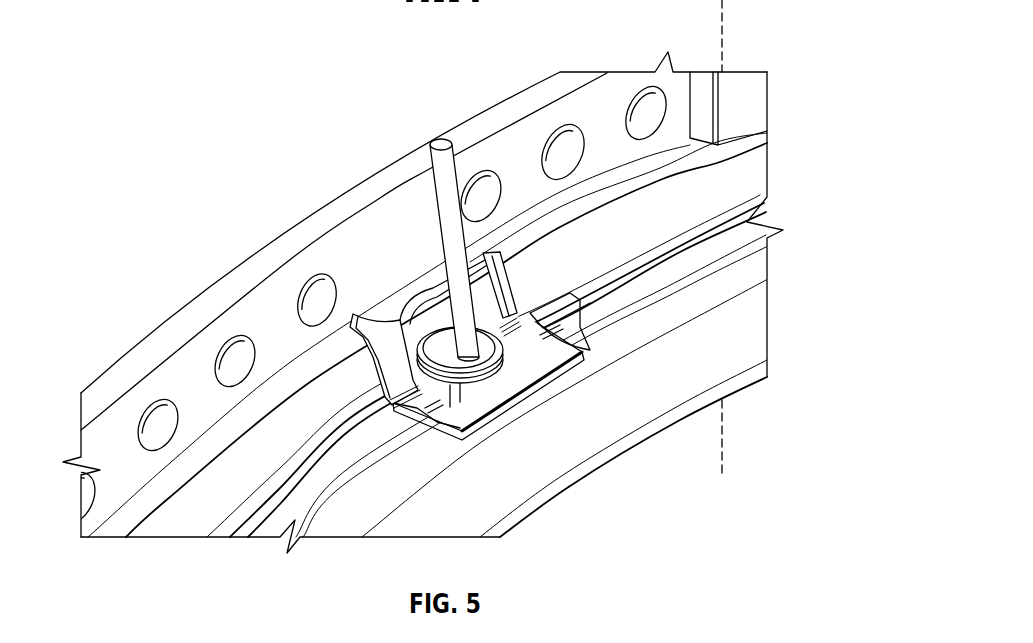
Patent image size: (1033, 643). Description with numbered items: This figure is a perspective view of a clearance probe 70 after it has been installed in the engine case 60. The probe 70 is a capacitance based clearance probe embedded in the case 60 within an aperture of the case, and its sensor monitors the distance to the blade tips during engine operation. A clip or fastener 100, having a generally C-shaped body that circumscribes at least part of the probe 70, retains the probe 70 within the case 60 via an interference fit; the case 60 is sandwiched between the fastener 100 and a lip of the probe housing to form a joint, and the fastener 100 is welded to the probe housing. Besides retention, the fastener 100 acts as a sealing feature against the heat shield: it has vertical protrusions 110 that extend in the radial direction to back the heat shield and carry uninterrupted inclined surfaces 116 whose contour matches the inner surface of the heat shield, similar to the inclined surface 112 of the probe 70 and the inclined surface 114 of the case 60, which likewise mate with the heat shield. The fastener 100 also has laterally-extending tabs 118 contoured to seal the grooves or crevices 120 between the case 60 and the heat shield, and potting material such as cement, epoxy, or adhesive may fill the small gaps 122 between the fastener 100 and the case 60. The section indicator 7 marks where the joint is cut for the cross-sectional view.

The case 60 is at (443, 513).
The probe 70 is at (445, 200).
The fastener 100 is at (537, 372).
The vertical protrusions 110 is at (385, 335).
The inclined surface of the probe 112 is at (435, 330).
The inclined surface of the case 114 is at (183, 523).
The inclined surfaces 116 is at (432, 413).
The laterally-extending tabs 118 is at (417, 410).
The grooves or crevices 120 is at (317, 457).
The small gaps 122 is at (402, 372).
The section line 7 is at (722, 475).